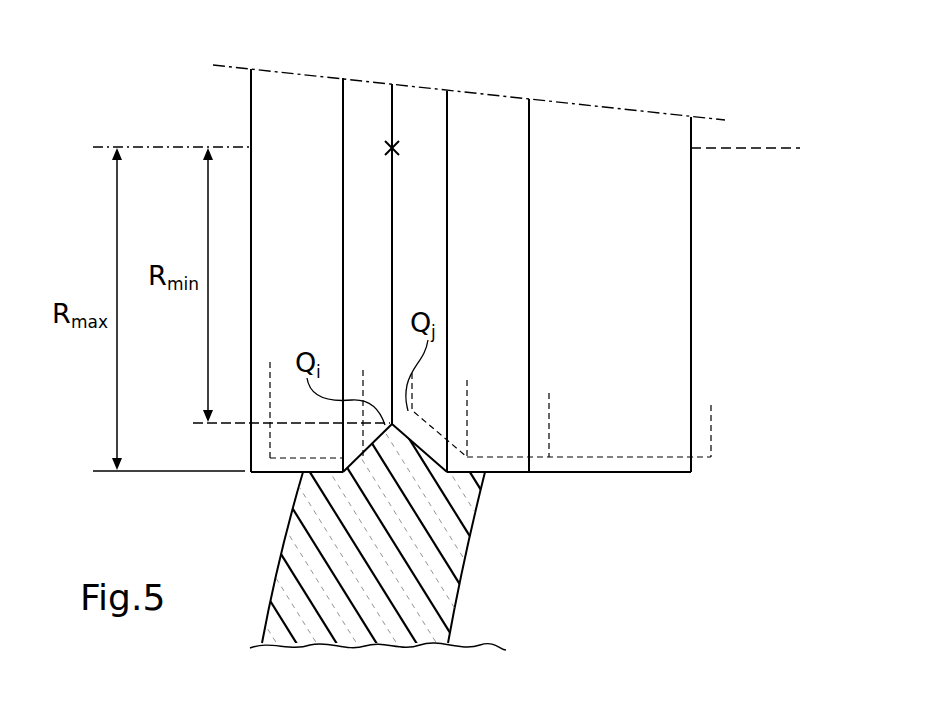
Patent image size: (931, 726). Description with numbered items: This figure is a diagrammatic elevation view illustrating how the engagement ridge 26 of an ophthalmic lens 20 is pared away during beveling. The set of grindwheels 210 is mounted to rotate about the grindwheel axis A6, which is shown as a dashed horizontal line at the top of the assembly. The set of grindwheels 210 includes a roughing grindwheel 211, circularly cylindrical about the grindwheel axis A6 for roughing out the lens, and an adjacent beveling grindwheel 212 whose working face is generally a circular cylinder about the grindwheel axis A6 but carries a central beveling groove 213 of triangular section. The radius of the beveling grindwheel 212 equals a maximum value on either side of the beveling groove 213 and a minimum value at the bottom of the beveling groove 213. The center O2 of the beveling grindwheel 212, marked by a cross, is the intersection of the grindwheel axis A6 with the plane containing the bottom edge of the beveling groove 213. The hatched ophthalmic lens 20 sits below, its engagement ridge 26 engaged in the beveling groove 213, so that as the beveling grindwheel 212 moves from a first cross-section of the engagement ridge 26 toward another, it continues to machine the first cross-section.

The ophthalmic lens 20 is at (472, 596).
The engagement ridge 26 is at (420, 437).
The set of grindwheels 210 is at (706, 281).
The roughing grindwheel 211 is at (643, 473).
The beveling grindwheel 212 is at (513, 473).
The beveling groove 213 is at (350, 476).
The grindwheel axis A6 is at (787, 148).
The center of the beveling grindwheel O2 is at (411, 134).